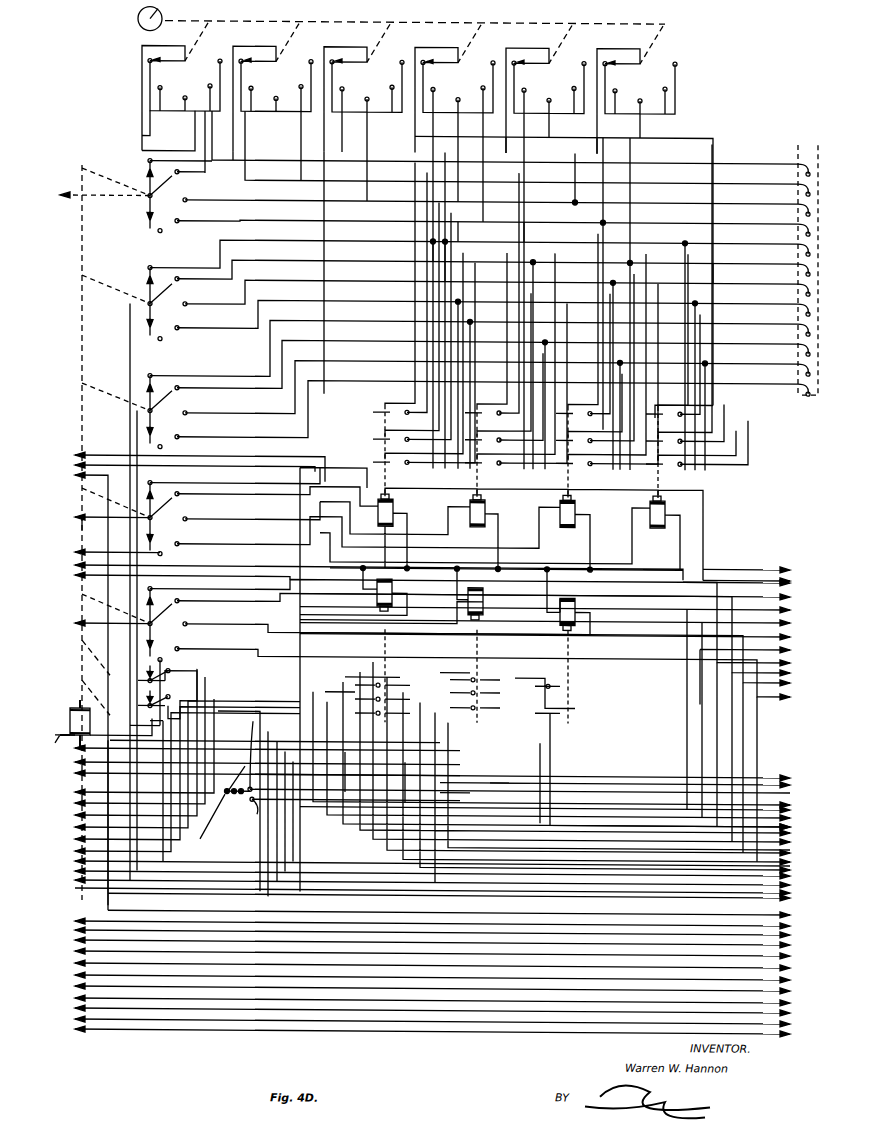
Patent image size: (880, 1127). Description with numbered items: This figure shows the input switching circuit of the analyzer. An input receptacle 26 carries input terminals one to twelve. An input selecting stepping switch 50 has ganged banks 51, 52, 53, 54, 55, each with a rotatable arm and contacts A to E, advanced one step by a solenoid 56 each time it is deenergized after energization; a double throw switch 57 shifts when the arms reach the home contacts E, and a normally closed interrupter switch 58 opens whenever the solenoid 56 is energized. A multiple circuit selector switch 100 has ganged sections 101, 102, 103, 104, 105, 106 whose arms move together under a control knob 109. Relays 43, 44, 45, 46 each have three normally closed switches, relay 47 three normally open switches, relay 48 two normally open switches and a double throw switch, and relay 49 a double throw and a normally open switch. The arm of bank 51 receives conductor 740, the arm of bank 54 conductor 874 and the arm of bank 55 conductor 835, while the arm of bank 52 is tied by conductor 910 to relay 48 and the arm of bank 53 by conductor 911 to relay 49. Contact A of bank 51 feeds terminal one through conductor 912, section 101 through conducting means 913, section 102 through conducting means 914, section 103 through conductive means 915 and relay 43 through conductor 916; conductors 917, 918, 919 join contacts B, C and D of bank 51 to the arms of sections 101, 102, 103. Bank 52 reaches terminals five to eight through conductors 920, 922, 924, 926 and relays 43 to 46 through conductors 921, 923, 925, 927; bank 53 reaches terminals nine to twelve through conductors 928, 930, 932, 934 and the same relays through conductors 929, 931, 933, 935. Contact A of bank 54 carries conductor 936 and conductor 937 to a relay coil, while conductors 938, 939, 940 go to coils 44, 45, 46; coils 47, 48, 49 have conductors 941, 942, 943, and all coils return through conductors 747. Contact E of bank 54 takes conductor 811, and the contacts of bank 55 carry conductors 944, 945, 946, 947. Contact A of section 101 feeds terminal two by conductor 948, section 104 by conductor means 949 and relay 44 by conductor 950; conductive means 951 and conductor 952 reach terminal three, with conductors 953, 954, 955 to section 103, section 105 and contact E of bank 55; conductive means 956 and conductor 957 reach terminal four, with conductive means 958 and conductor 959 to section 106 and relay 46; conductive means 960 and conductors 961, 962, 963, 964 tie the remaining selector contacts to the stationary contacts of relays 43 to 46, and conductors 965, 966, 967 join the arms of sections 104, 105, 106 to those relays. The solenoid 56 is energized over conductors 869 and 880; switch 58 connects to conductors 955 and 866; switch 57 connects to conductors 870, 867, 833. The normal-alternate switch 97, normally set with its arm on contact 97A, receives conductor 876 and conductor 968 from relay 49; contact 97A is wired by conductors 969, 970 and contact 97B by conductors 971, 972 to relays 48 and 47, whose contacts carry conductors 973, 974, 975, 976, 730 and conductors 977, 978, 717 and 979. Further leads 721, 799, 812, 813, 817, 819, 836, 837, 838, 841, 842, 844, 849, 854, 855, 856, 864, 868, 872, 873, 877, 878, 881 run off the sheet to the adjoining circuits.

The control knob 109 is at (163, 14).
The multiple circuit selector switch 100 is at (330, 22).
The selector switch section 101 is at (183, 98).
The selector switch section 102 is at (274, 99).
The selector switch section 103 is at (365, 100).
The selector switch section 104 is at (456, 100).
The selector switch section 105 is at (547, 101).
The selector switch section 106 is at (638, 102).
The input board, plug, receptacle or the like 26 is at (810, 142).
The input selecting stepping switch 50 is at (82, 335).
The switch bank 51 is at (166, 193).
The switch bank 52 is at (166, 301).
The switch bank 53 is at (166, 409).
The switch bank 54 is at (171, 524).
The switch bank 55 is at (171, 628).
The solenoid 56 is at (90, 698).
The double throw switch 57 is at (172, 695).
The circuit interrupter switch 58 is at (170, 668).
The relay 43 is at (397, 507).
The relay 44 is at (489, 507).
The relay 45 is at (579, 507).
The relay 46 is at (669, 507).
The relay 47 is at (372, 591).
The relay 48 is at (463, 599).
The relay 49 is at (580, 614).
The normal-alternate switch 97 is at (228, 796).
The normal-alternate switch contact 97A is at (239, 801).
The normal-alternate switch contact 97B is at (248, 812).
The conductor 740 is at (74, 190).
The conductors 747 is at (660, 576).
The conductor 910 is at (130, 351).
The conductor 911 is at (137, 435).
The conductor 912 is at (505, 137).
The conducting means 913 is at (195, 142).
The conducting means 914 is at (295, 145).
The conductive means 915 is at (380, 156).
The conductor 916 is at (440, 311).
The conductor 917 is at (142, 110).
The conductor 918 is at (491, 210).
The conductor 919 is at (487, 214).
The conductor 920 is at (474, 249).
The conductor 921 is at (467, 260).
The conductor 922 is at (487, 264).
The conductor 923 is at (554, 368).
The conductor 924 is at (491, 287).
The conductor 925 is at (636, 375).
The conductor 926 is at (487, 309).
The conductor 927 is at (717, 386).
The conductor 928 is at (474, 343).
The conductor 929 is at (482, 394).
The conductor 930 is at (487, 359).
The conductor 931 is at (559, 405).
The conductor 932 is at (491, 381).
The conductor 933 is at (639, 415).
The conductor 934 is at (487, 403).
The conductor 935 is at (703, 416).
The conductor 936 is at (720, 903).
The conductor 937 is at (235, 484).
The conductor 938 is at (248, 501).
The conductor 939 is at (252, 516).
The conductor 940 is at (248, 534).
The conductor 941 is at (747, 564).
The conductor 942 is at (752, 577).
The conductor 943 is at (560, 591).
The conductor 944 is at (485, 623).
The conductor 945 is at (499, 636).
The conductor 946 is at (503, 657).
The conductor 947 is at (499, 678).
The conductor 948 is at (521, 147).
The conductor means 949 is at (435, 128).
The conductor 950 is at (528, 291).
The conductive means 951 is at (249, 140).
The conductor 952 is at (473, 157).
The conductor 953 is at (341, 262).
The conductive means 954 is at (561, 125).
The conductor 955 is at (583, 283).
The conductive means 956 is at (350, 132).
The conductor 957 is at (478, 167).
The conductive means 958 is at (650, 126).
The conductor 959 is at (668, 349).
The conductive means 960 is at (564, 270).
The conductor 961 is at (473, 378).
The conductor 962 is at (556, 264).
The conductor 963 is at (644, 304).
The conductor 964 is at (729, 265).
The conductor 965 is at (407, 243).
The conductor 966 is at (470, 232).
The conductor 967 is at (552, 232).
The conductor 968 is at (387, 798).
The conductor 969 is at (363, 778).
The conductor 970 is at (367, 676).
The conductor 971 is at (423, 783).
The conductor 972 is at (337, 683).
The conductor 973 is at (570, 802).
The conductor 974 is at (462, 676).
The conductor 975 is at (560, 817).
The conductor 976 is at (458, 800).
The conductor 977 is at (510, 790).
The conductor 978 is at (530, 683).
The conductor 979 is at (555, 770).
The conductor 717 is at (275, 735).
The lead 721 is at (126, 749).
The conductor 730 is at (121, 743).
The lead 799 is at (249, 764).
The conductor 811 is at (100, 547).
The lead 812 is at (430, 693).
The lead 813 is at (760, 765).
The lead 817 is at (80, 450).
The lead 819 is at (124, 822).
The conductor 833 is at (429, 665).
The conductor 835 is at (95, 623).
The lead 836 is at (429, 966).
The lead 837 is at (429, 1013).
The lead 838 is at (429, 990).
The lead 841 is at (429, 930).
The lead 842 is at (429, 1031).
The lead 844 is at (429, 865).
The lead 849 is at (429, 1002).
The lead 854 is at (430, 605).
The lead 855 is at (117, 745).
The lead 856 is at (445, 902).
The lead 864 is at (429, 920).
The conductor 866 is at (169, 768).
The conductor 867 is at (169, 786).
The lead 868 is at (429, 942).
The conductor 869 is at (60, 720).
The conductor 870 is at (169, 777).
The lead 872 is at (108, 895).
The lead 873 is at (429, 877).
The conductor 874 is at (95, 517).
The conductor 876 is at (261, 780).
The lead 877 is at (429, 954).
The lead 878 is at (429, 978).
The conductor 880 is at (249, 750).
The lead 881 is at (100, 1030).